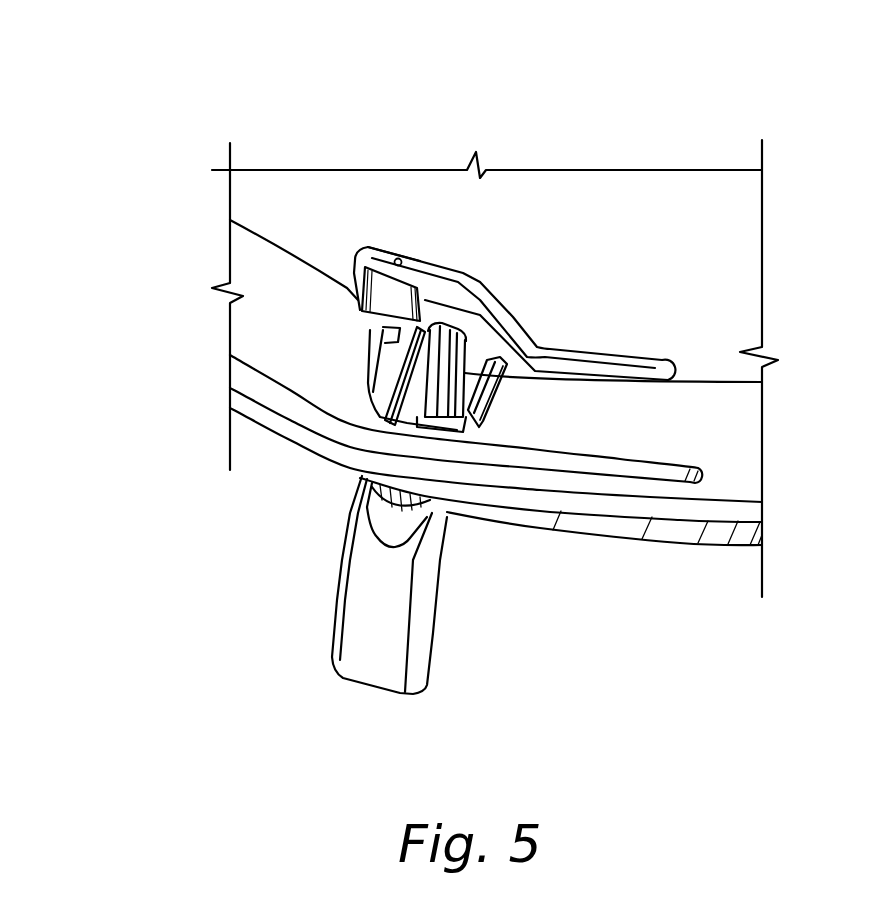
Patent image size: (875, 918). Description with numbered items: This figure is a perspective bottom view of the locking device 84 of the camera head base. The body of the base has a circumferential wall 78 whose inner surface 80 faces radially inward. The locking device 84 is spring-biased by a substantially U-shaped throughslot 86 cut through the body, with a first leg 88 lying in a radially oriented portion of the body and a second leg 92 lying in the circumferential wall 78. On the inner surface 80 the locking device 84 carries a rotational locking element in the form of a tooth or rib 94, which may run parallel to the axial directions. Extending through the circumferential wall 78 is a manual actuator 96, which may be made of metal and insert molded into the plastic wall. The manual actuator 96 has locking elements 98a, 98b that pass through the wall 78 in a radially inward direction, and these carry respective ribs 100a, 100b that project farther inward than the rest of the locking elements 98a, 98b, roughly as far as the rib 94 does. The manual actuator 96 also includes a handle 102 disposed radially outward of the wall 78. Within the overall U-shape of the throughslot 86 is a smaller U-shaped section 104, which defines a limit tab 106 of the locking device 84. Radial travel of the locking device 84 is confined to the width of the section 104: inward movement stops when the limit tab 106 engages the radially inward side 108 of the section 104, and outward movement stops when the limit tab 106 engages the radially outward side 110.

The circumferential wall 78 is at (252, 270).
The inner surface 80 is at (705, 403).
The locking device 84 is at (130, 557).
The U-shaped throughslot 86 is at (620, 467).
The first leg 88 is at (500, 350).
The second leg 92 is at (535, 467).
The rib 94 is at (452, 328).
The manual actuator 96 is at (360, 542).
The locking element 98a is at (352, 407).
The locking element 98b is at (510, 347).
The rib 100a is at (352, 343).
The rib 100b is at (533, 370).
The handle 102 is at (390, 633).
The U-shaped section 104 is at (357, 262).
The limit tab 106 is at (381, 248).
The radially inward side 108 is at (406, 259).
The radially outward side 110 is at (347, 287).